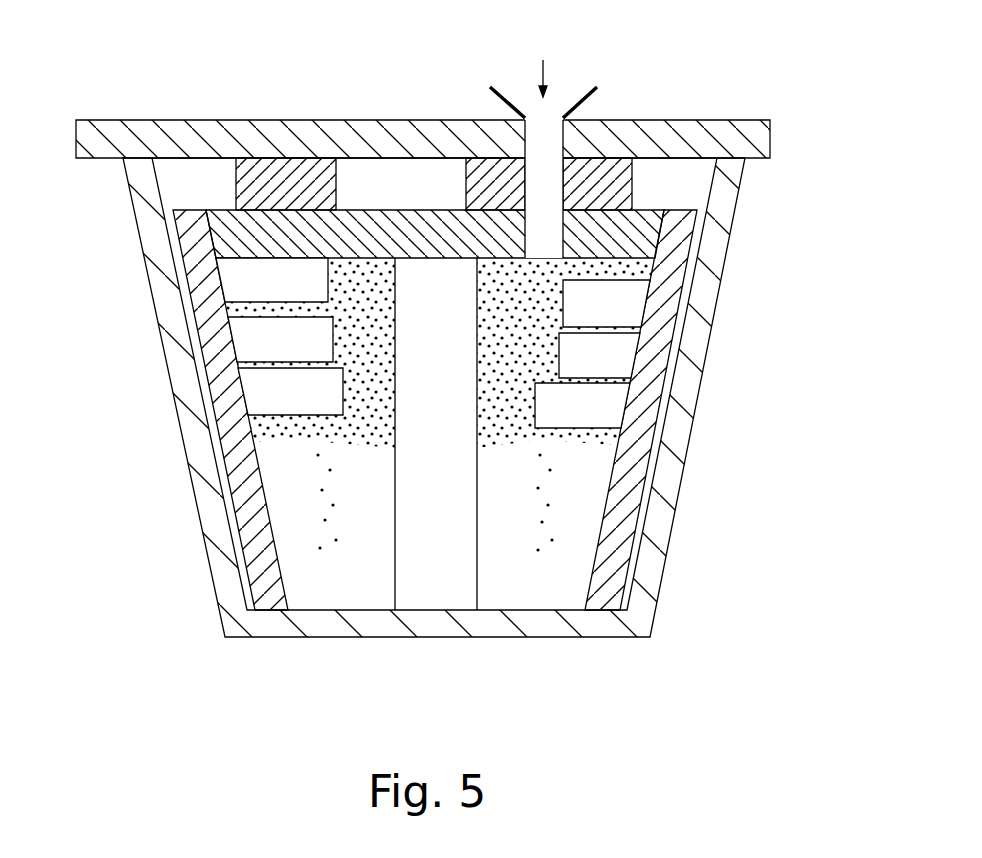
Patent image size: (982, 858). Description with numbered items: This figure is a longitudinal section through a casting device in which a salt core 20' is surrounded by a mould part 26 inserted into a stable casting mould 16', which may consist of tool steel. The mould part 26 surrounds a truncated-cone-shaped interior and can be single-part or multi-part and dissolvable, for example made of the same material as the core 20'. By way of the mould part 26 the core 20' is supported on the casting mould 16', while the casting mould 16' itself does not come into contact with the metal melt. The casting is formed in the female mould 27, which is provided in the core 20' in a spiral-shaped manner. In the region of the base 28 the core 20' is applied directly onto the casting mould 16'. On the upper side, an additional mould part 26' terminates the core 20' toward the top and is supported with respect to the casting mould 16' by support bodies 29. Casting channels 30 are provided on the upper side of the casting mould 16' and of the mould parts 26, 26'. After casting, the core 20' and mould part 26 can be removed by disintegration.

The casting mould 16' is at (400, 397).
The core 20' is at (435, 497).
The mould part 26 is at (389, 410).
The additional mould part 26' is at (522, 140).
The female mould 27 is at (620, 305).
The base 28 is at (355, 638).
The support bodies 29 is at (236, 184).
The casting channels 30 is at (566, 90).